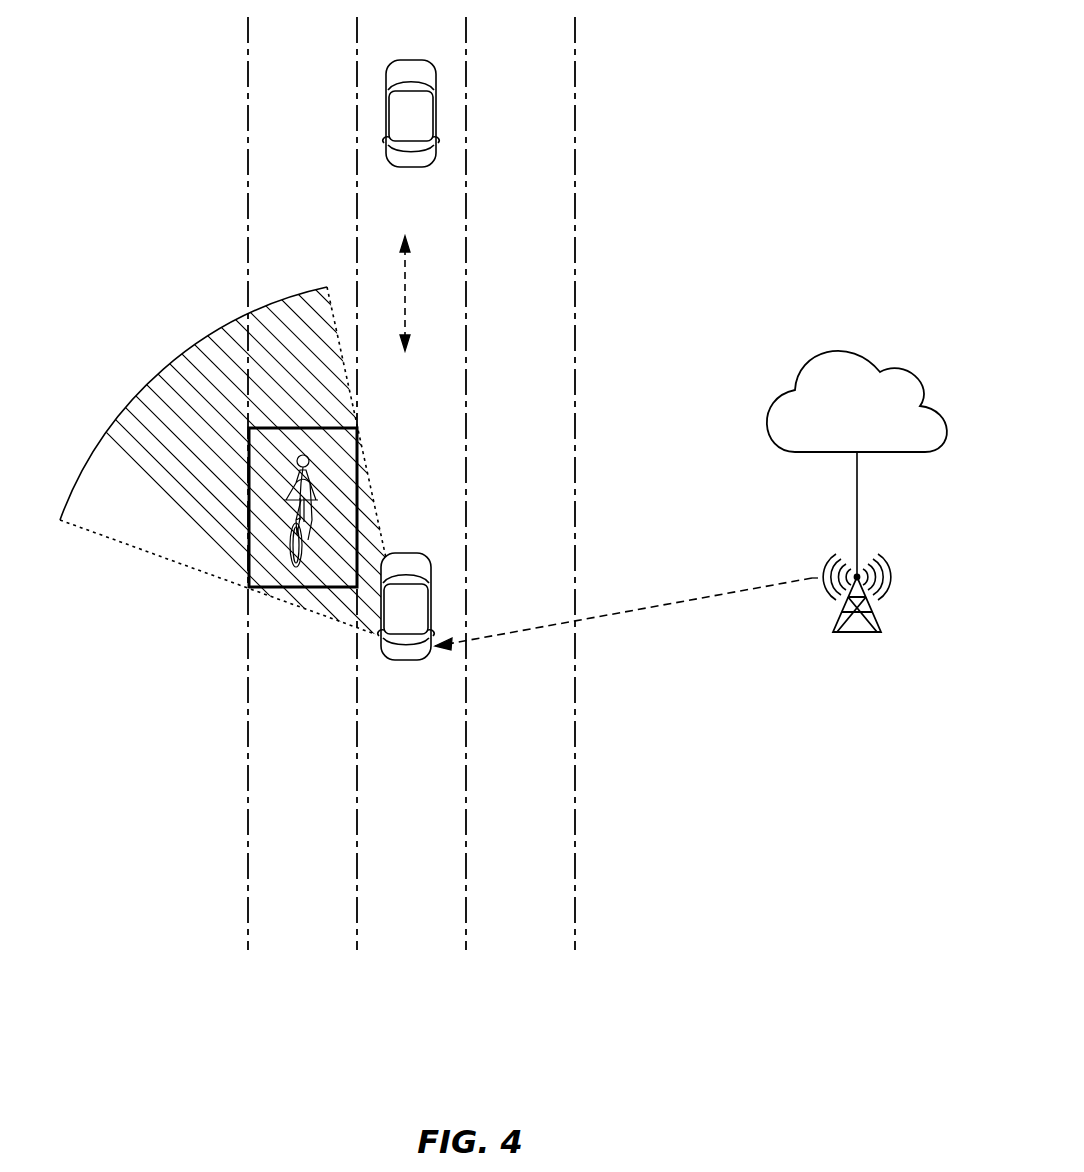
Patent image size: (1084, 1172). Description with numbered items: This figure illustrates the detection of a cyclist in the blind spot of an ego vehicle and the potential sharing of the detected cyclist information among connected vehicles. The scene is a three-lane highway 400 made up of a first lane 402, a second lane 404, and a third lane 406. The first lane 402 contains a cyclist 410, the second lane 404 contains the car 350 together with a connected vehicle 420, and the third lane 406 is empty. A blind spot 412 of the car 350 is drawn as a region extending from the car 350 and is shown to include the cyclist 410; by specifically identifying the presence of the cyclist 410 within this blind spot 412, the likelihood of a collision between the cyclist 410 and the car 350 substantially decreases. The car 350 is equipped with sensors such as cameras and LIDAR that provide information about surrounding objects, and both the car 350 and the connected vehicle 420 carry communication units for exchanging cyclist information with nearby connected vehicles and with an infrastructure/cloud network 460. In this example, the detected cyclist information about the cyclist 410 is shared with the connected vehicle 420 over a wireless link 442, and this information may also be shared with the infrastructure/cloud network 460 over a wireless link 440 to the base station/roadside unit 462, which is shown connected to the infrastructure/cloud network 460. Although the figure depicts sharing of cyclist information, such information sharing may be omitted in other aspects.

The car 350 is at (390, 618).
The three-lane highway 400 is at (302, 475).
The first lane 402 is at (288, 945).
The second lane 404 is at (397, 945).
The third lane 406 is at (506, 945).
The cyclist 410 is at (249, 590).
The blind spot 412 is at (338, 628).
The connected vehicle 420 is at (395, 125).
The wireless link 440 is at (549, 620).
The wireless link 442 is at (405, 295).
The infrastructure/cloud network 460 is at (839, 348).
The base station/roadside unit 462 is at (872, 612).